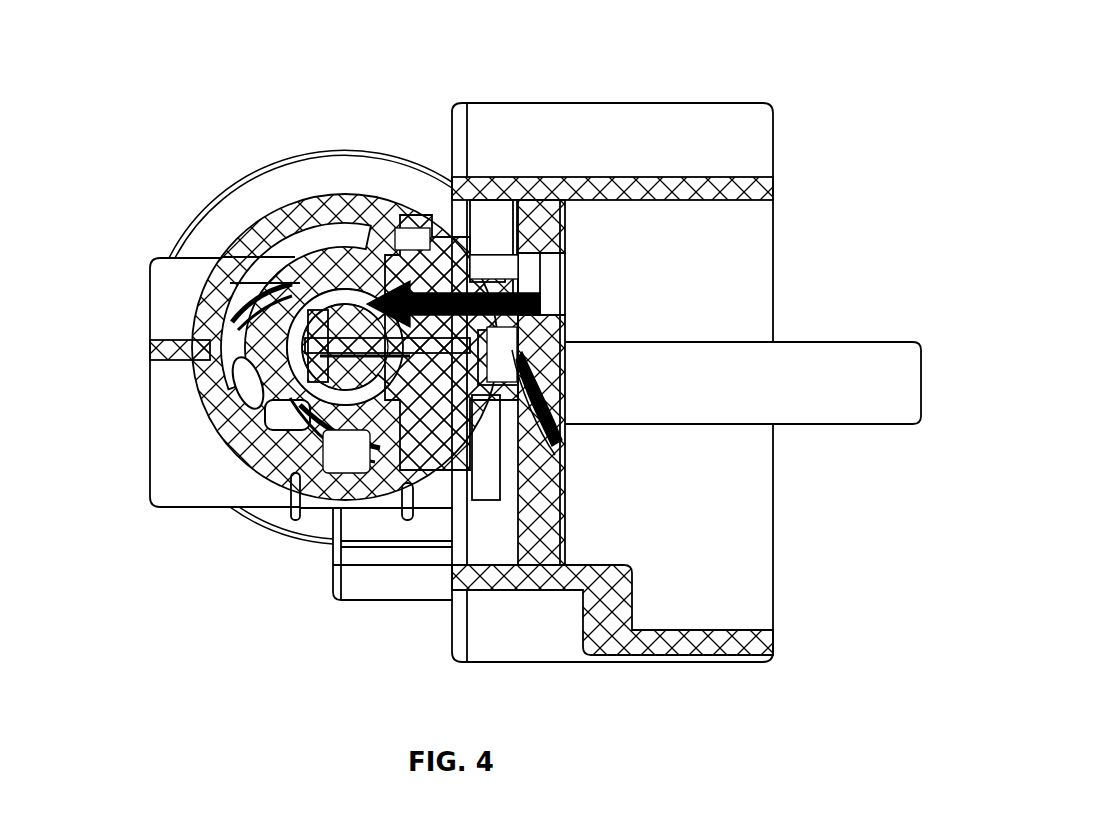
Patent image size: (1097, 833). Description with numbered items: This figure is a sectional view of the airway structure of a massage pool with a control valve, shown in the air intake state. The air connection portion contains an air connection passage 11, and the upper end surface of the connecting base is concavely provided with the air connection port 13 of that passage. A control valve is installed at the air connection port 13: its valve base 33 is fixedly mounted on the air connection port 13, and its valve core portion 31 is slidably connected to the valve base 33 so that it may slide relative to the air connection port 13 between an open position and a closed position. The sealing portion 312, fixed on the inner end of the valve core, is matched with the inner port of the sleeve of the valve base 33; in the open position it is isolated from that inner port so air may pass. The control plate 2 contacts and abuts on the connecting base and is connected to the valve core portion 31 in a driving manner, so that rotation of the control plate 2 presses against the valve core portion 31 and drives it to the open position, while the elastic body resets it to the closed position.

The control plate 2 is at (545, 295).
The air connection passage 11 is at (210, 398).
The air connection port 13 is at (345, 450).
The valve core portion 31 is at (563, 440).
The valve base 33 is at (407, 210).
The sealing portion 312 is at (313, 287).